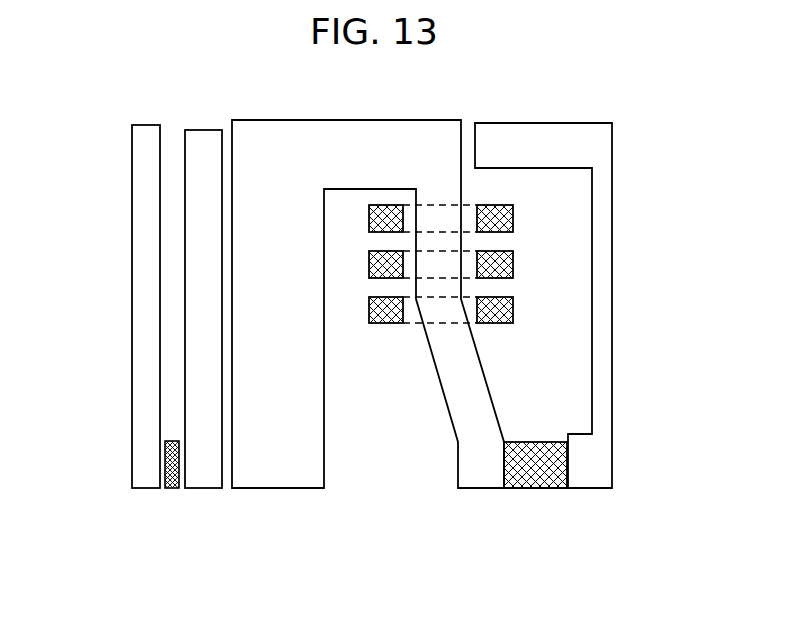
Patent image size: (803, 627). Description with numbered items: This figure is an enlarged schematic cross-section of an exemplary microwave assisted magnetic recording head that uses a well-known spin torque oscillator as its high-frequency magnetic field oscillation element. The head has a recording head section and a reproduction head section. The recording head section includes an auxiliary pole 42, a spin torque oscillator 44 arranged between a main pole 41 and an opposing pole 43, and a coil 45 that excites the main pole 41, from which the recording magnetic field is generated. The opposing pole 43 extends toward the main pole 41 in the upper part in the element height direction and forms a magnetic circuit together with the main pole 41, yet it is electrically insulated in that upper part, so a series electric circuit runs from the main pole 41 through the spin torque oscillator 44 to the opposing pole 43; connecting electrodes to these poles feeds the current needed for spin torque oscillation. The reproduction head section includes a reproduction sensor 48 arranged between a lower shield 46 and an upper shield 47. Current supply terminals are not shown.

The main pole 41 is at (463, 490).
The auxiliary pole 42 is at (305, 495).
The opposing pole 43 is at (612, 407).
The spin torque oscillator 44 is at (563, 498).
The coil 45 is at (384, 328).
The lower shield 46 is at (138, 350).
The upper shield 47 is at (206, 495).
The reproduction sensor 48 is at (175, 495).